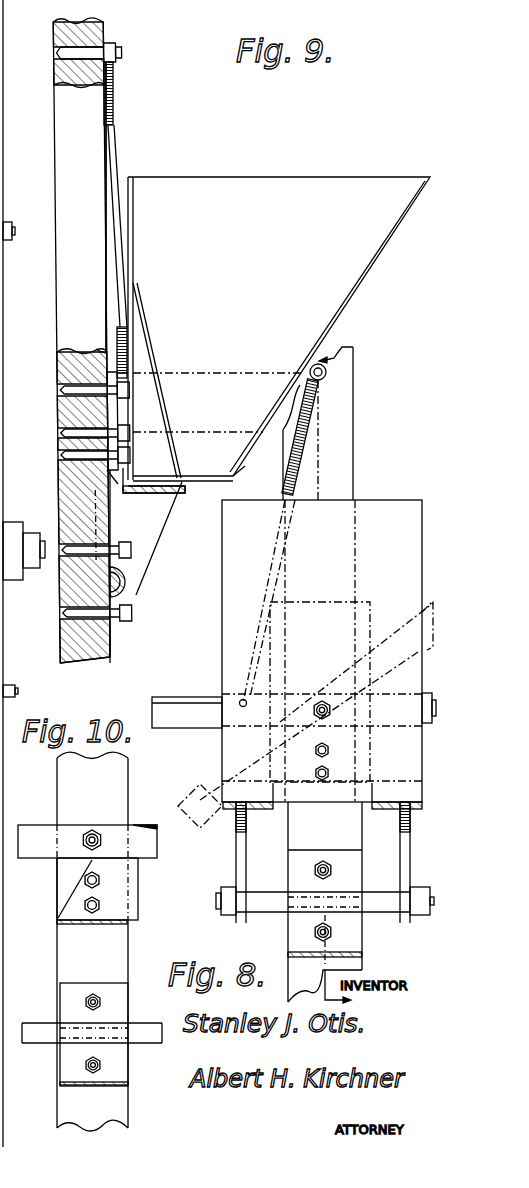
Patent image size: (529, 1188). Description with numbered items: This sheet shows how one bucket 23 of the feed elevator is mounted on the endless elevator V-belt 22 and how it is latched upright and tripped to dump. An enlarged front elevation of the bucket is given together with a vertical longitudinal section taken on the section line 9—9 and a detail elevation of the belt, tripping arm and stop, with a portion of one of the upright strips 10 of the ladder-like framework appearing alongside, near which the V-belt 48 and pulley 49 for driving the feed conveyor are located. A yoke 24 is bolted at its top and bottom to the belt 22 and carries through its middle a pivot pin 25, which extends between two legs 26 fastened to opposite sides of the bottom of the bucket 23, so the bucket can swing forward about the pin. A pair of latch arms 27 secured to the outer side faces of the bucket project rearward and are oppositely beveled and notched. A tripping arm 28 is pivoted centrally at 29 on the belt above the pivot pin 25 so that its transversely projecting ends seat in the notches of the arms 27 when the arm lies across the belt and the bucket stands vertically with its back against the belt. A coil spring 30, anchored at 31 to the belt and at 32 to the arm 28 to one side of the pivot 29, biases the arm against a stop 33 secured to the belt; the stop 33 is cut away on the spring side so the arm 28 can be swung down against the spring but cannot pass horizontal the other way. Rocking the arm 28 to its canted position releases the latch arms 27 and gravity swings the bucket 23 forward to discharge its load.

In FIG. 8, the section line 9— 9 is at (329, 679).
In FIG. 9, the upright strips 10 is at (15, 573).
In FIG. 9, the elevator V-belt 22 is at (102, 30).
In FIG. 8, the elevator V-belt 22 is at (349, 427).
In FIG. 10, the elevator V-belt 22 is at (72, 963).
In FIG. 9, the bucket 23 is at (381, 178).
In FIG. 8, the bucket 23 is at (372, 504).
In FIG. 9, the yoke 24 is at (112, 536).
In FIG. 8, the yoke 24 is at (300, 872).
In FIG. 10, the yoke 24 is at (94, 1034).
In FIG. 9, the pivot pin 25 is at (133, 594).
In FIG. 8, the pivot pin 25 is at (220, 905).
In FIG. 9, the legs 26 is at (156, 534).
In FIG. 8, the legs 26 is at (243, 854).
In FIG. 10, the legs 26 is at (142, 1030).
In FIG. 9, the latch arms 27 is at (47, 415).
In FIG. 9, the tripping arm 28 is at (108, 378).
In FIG. 8, the tripping arm 28 is at (162, 710).
In FIG. 10, the tripping arm 28 is at (32, 842).
In FIG. 9, the pivot 29 is at (58, 390).
In FIG. 8, the pivot 29 is at (322, 700).
In FIG. 10, the pivot 29 is at (93, 830).
In FIG. 9, the coil spring 30 is at (117, 120).
In FIG. 8, the coil spring 30 is at (298, 500).
In FIG. 9, the spring anchor 31 is at (118, 53).
In FIG. 8, the spring anchor on arm 32 is at (234, 700).
In FIG. 9, the stop 33 is at (122, 416).
In FIG. 8, the stop 33 is at (343, 762).
In FIG. 10, the stop 33 is at (136, 879).
In FIG. 9, the V-belt 48 is at (15, 523).
In FIG. 9, the pulley 49 is at (25, 525).